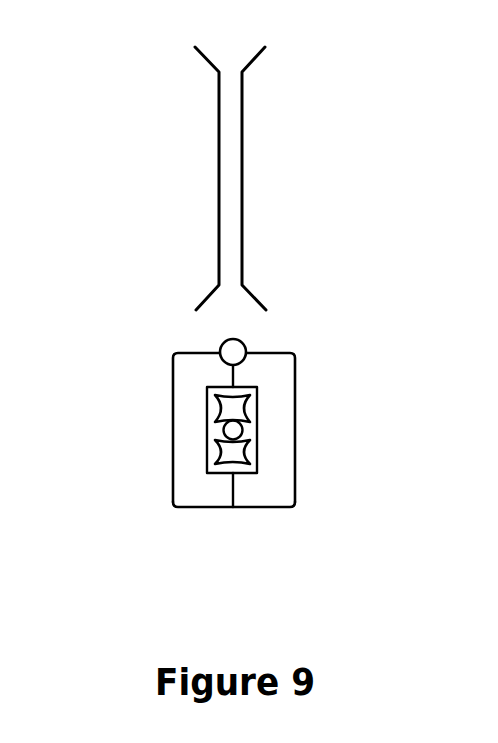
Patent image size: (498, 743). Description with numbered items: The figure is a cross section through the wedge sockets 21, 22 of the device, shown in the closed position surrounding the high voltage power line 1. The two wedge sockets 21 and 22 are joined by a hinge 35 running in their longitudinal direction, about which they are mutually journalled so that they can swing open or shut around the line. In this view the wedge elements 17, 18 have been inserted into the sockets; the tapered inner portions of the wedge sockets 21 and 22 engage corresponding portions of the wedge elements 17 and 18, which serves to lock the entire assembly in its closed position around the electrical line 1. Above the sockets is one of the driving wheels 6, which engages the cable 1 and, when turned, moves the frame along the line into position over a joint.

The driving wheel 6 is at (219, 115).
The hinge 35 is at (246, 339).
The wedge element 17 is at (250, 412).
The high voltage power line 1 is at (242, 433).
The wedge element 18 is at (250, 455).
The wedge socket 22 is at (172, 478).
The wedge socket 21 is at (285, 508).